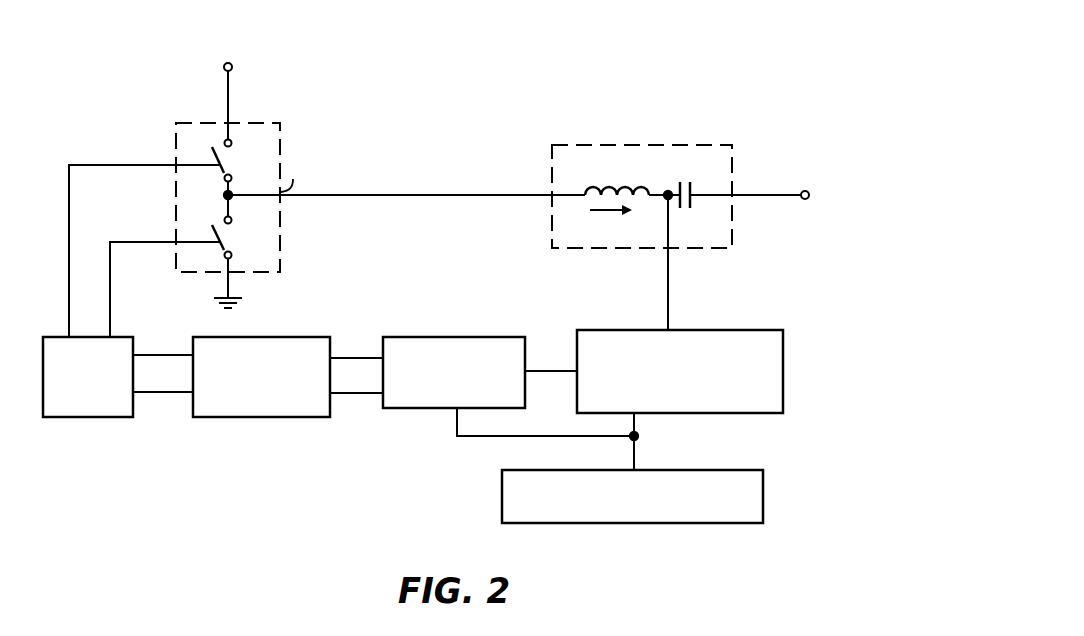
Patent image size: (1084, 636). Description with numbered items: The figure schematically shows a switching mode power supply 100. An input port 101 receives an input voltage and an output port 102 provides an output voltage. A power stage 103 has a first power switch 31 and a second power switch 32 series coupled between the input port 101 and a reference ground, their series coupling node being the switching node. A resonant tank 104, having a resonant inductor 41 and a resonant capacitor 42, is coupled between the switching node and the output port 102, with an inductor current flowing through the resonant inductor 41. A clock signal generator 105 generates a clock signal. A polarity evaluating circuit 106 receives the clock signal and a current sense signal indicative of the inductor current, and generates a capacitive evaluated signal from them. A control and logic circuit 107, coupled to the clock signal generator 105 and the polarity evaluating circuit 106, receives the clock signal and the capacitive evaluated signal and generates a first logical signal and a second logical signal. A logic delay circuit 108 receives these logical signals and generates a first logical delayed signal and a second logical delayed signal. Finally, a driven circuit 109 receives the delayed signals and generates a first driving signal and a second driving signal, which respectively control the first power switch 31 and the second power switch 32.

The switching mode power supply 100 is at (761, 80).
The input port 101 is at (237, 87).
The output port 102 is at (771, 181).
The power stage 103 is at (253, 215).
The first power switch 31 is at (230, 162).
The second power switch 32 is at (230, 240).
The resonant tank 104 is at (642, 175).
The resonant inductor 41 is at (601, 185).
The resonant capacitor 42 is at (697, 175).
The clock signal generator 105 is at (497, 497).
The polarity evaluating circuit 106 is at (747, 327).
The control and logic circuit 107 is at (467, 333).
The logic delay circuit 108 is at (265, 418).
The driven circuit 109 is at (78, 418).